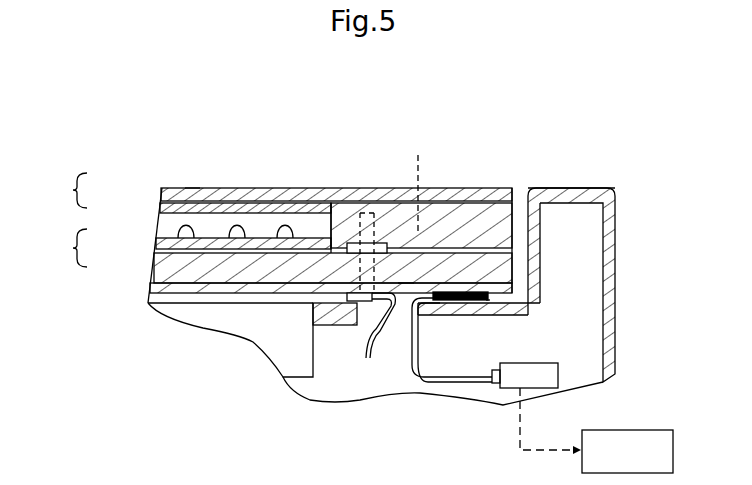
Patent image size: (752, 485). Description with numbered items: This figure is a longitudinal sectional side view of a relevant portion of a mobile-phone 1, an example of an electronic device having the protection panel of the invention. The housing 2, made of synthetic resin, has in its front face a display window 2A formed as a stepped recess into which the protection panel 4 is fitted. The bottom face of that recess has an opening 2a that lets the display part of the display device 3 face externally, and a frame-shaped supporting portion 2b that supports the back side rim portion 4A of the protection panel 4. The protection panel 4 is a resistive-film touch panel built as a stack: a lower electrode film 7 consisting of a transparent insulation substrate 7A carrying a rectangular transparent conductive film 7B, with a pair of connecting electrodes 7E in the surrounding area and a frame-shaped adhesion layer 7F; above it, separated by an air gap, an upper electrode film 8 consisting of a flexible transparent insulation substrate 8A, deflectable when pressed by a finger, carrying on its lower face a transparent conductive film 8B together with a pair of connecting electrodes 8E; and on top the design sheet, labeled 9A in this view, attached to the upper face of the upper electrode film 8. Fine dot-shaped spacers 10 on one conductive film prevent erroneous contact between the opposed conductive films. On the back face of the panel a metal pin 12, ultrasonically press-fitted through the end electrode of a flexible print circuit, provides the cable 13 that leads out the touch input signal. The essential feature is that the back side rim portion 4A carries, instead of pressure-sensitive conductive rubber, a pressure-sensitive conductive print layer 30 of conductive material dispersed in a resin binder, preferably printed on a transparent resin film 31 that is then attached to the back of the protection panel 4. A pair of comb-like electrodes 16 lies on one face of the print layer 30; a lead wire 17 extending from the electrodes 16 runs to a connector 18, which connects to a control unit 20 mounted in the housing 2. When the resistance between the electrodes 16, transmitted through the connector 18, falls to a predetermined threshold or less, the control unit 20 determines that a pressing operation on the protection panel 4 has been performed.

The mobile-phone 1 is at (636, 192).
The housing 2 is at (617, 283).
The display window 2A is at (520, 210).
The opening 2a is at (313, 310).
The supporting portion 2b is at (525, 312).
The display device 3 is at (247, 332).
The protection panel 4 is at (366, 185).
The back side rim portion 4A is at (406, 284).
The lower electrode film 7 is at (72, 248).
The transparent insulation substrate 7A is at (170, 258).
The transparent conductive film 7B is at (170, 242).
The connecting electrodes 7E is at (345, 212).
The adhesion layer 7F is at (450, 212).
The upper electrode film 8 is at (72, 190).
The flexible transparent insulation substrate 8A is at (167, 193).
The transparent conductive film 8B is at (167, 209).
The connecting electrodes 8E is at (419, 183).
The operation surface 9A is at (192, 188).
The dot-shaped spacer 10 is at (285, 227).
The metal pin 12 is at (368, 330).
The cable 13 is at (368, 360).
The comb-like electrodes 16 is at (471, 305).
The lead wire 17 is at (455, 380).
The connector 18 is at (557, 380).
The control unit 20 is at (643, 430).
The pressure-sensitive conductive print layer 30 is at (488, 300).
The transparent resin film 31 is at (220, 287).